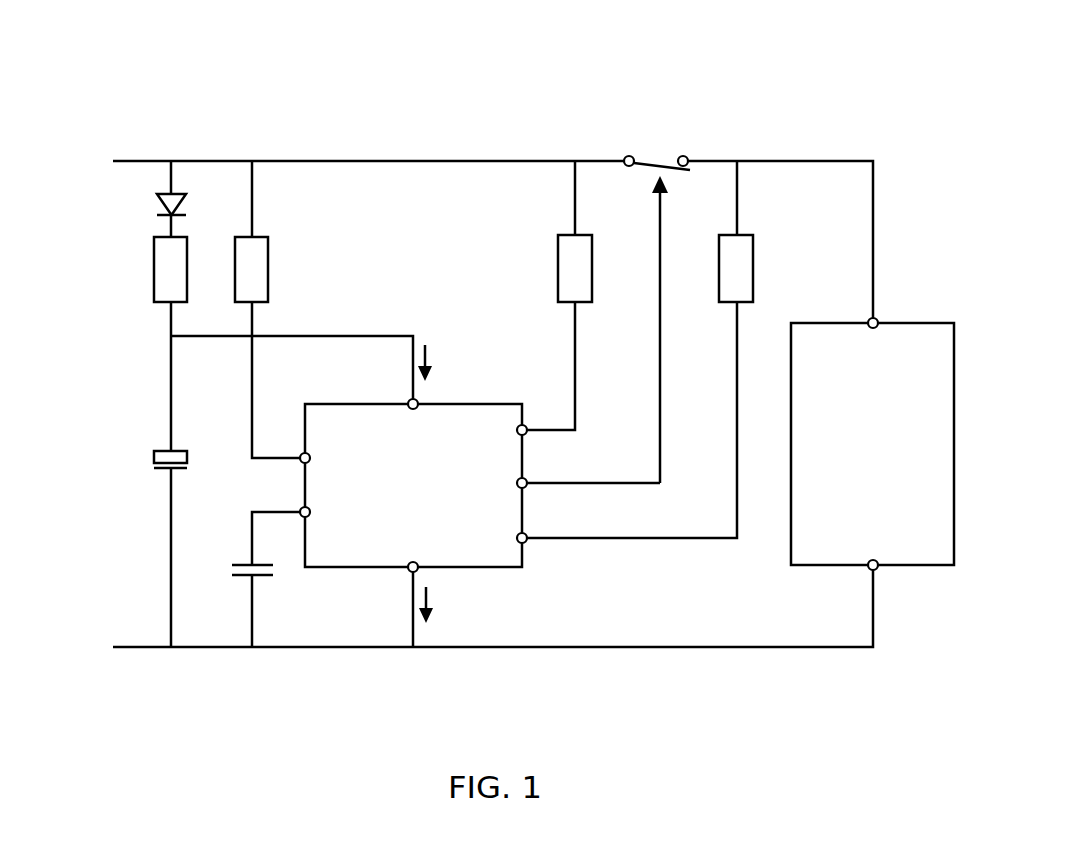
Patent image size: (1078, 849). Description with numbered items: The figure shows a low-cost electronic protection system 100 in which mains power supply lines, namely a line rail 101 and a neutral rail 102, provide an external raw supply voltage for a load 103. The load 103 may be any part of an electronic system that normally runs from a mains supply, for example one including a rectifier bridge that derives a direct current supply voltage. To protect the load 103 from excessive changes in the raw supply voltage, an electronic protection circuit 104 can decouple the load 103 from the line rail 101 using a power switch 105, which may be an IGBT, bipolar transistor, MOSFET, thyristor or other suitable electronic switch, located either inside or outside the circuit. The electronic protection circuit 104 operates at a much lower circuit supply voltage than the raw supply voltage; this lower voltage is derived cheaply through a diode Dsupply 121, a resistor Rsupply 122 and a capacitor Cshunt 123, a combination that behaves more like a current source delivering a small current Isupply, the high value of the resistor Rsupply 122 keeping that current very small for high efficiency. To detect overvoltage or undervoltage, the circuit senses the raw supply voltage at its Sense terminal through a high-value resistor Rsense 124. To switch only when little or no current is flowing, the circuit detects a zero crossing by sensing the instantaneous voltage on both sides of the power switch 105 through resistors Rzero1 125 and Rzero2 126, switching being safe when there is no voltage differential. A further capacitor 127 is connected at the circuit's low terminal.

The electronic protection system 100 is at (168, 42).
The line rail 101 is at (110, 150).
The neutral rail 102 is at (103, 662).
The load 103 is at (872, 444).
The electronic protection circuit 104 is at (415, 491).
The power switch 105 is at (646, 151).
The diode Dsupply 121 is at (155, 223).
The resistor Rsupply 122 is at (161, 307).
The capacitor Cshunt 123 is at (155, 481).
The resistor Rsense 124 is at (273, 247).
The resistor Rzero1 125 is at (565, 307).
The resistor Rzero2 126 is at (748, 228).
The capacitor Clo 127 is at (262, 583).